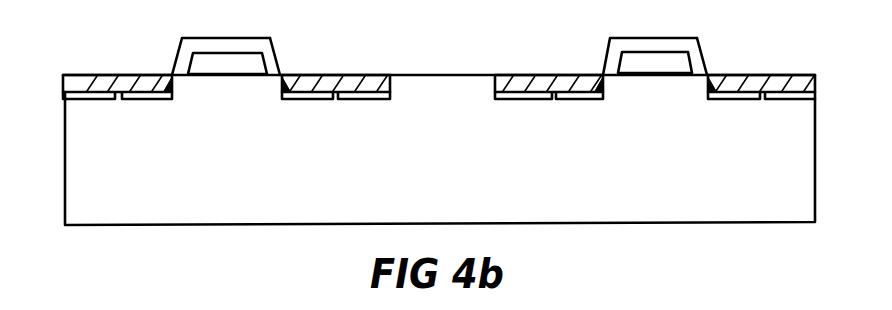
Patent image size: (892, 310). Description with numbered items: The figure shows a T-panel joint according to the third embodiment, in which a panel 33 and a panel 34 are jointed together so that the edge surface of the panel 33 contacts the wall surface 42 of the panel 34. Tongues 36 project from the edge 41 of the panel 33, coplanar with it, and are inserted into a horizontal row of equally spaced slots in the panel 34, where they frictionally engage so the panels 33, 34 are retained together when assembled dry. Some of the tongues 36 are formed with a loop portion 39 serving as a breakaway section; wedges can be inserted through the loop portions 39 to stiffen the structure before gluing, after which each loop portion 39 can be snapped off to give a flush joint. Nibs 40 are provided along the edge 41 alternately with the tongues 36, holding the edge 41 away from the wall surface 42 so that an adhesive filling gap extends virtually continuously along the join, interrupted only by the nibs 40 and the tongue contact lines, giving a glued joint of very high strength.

The panel 33 is at (772, 203).
The panel 34 is at (108, 82).
The tongue 36 is at (261, 92).
The loop portion 39 is at (238, 47).
The nib 40 is at (118, 100).
The edge 41 is at (160, 100).
The wall surface 42 is at (62, 97).